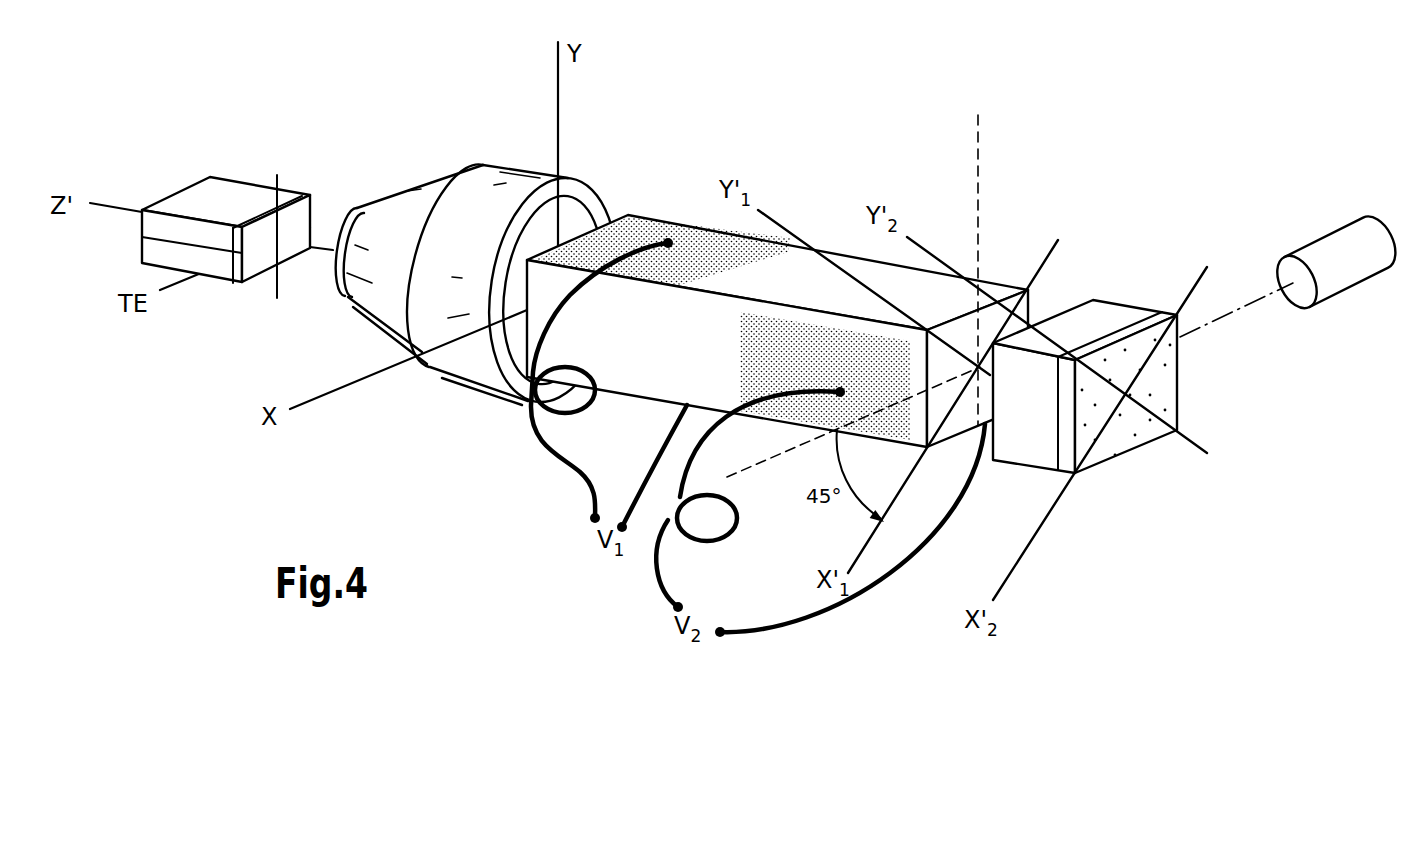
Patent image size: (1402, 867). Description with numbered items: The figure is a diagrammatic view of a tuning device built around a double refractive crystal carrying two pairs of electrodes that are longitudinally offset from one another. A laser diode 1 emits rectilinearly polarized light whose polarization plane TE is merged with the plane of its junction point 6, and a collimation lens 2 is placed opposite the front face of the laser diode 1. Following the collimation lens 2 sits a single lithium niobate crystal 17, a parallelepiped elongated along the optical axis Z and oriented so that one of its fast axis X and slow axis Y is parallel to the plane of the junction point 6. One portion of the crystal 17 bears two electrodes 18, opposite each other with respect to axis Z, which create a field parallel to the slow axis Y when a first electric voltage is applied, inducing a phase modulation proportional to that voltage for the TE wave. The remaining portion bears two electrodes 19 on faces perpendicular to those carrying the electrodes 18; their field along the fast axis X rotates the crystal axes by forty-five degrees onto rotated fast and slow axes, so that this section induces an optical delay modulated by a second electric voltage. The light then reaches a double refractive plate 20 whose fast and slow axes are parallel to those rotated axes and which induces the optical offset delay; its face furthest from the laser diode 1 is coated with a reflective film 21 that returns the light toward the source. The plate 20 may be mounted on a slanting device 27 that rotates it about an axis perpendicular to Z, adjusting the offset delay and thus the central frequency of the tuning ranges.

The laser diode 1 is at (225, 193).
The junction point 6 is at (265, 240).
The collimation lens 2 is at (492, 200).
The crystal 17 is at (855, 265).
The electrodes 18 is at (668, 243).
The electrodes 19 is at (1000, 322).
The double refractive plate 20 is at (1105, 320).
The reflective film 21 is at (1168, 387).
The slanting device 27 is at (1307, 247).